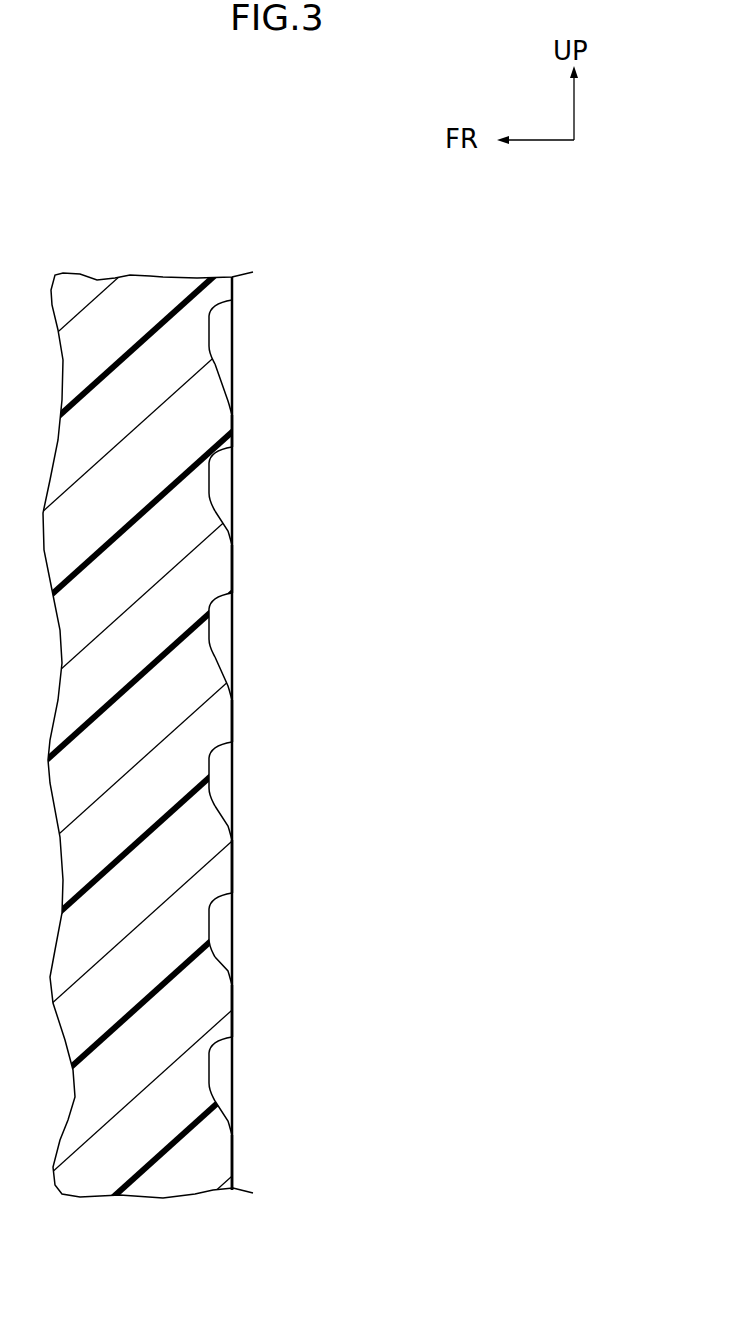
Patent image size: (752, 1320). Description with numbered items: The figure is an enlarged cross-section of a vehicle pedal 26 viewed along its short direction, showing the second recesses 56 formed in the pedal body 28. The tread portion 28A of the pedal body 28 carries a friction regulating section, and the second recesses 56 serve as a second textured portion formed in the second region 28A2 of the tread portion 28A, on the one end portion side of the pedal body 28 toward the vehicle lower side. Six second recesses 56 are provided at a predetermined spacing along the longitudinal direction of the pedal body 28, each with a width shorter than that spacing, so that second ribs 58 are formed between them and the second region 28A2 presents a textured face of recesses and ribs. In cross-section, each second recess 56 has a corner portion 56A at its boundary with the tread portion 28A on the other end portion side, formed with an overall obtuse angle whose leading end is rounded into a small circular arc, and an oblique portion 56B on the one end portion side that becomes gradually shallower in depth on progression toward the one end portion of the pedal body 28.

The vehicle interior member 26 is at (395, 240).
The pedal body 28 is at (172, 258).
The tread portion 28A is at (360, 722).
The second region 28A2 is at (232, 290).
The second recess 56 is at (211, 632).
The corner portion 56A is at (232, 299).
The oblique portion 56B is at (232, 370).
The second rib 58 is at (232, 415).